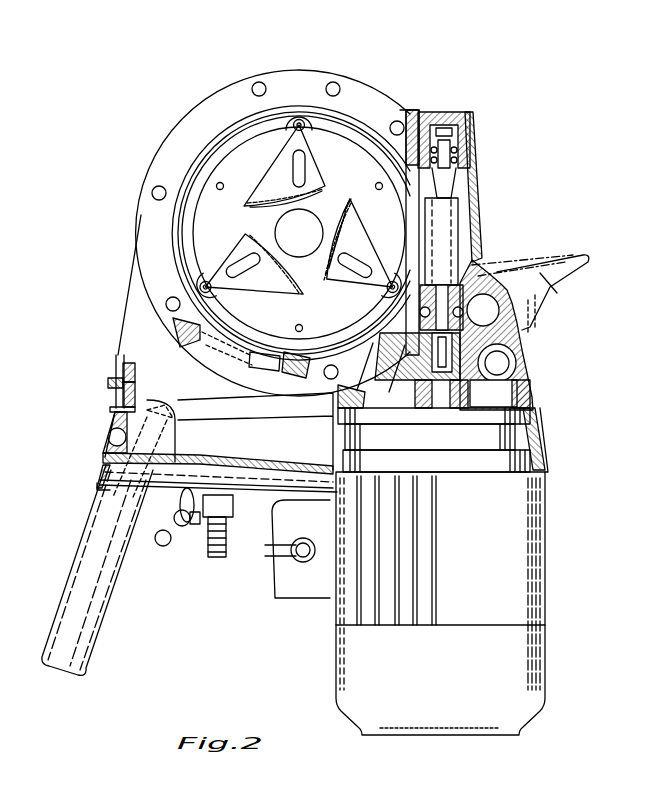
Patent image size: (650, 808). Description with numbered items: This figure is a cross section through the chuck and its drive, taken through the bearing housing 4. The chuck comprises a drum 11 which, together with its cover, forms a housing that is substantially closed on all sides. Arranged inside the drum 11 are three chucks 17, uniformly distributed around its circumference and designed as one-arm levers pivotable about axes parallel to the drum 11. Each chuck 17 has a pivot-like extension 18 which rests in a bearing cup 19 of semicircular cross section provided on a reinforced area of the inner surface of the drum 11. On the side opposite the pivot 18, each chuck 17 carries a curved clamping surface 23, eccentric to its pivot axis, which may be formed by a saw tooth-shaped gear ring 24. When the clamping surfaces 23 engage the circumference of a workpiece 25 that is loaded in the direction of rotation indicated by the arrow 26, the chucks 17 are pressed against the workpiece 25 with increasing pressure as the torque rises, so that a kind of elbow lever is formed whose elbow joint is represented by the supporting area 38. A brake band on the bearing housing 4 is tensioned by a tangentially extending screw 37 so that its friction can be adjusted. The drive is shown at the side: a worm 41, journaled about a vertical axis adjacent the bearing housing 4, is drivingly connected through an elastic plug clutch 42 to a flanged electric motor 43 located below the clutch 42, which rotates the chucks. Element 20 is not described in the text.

The bearing housing 4 is at (219, 100).
The drum 11 is at (378, 135).
The chucks 17 is at (289, 167).
The pivot-like extension 18 is at (297, 118).
The bearing cup 19 is at (314, 120).
The face plate 20 is at (317, 120).
The clamping surface 23 is at (331, 212).
The saw tooth-shaped gear ring 24 is at (349, 198).
The workpiece 25 is at (319, 217).
The arrow 26 is at (314, 212).
The screw 37 is at (258, 370).
The supporting area 38 is at (289, 207).
The worm 41 is at (447, 217).
The elastic plug clutch 42 is at (374, 376).
The flanged electric motor 43 is at (549, 488).